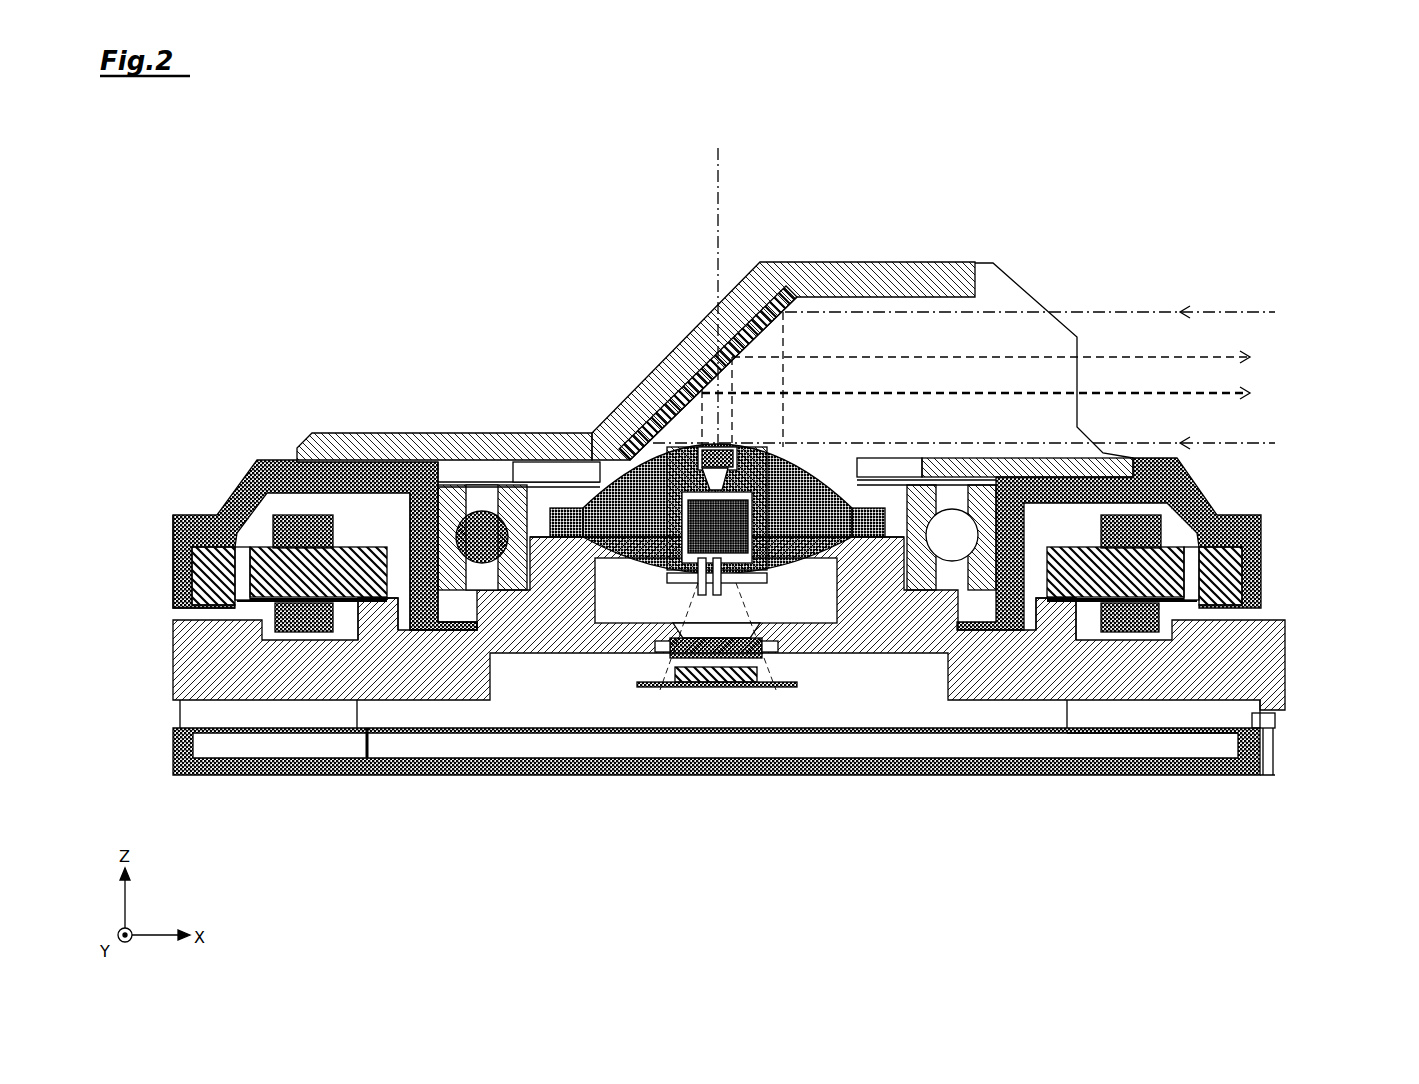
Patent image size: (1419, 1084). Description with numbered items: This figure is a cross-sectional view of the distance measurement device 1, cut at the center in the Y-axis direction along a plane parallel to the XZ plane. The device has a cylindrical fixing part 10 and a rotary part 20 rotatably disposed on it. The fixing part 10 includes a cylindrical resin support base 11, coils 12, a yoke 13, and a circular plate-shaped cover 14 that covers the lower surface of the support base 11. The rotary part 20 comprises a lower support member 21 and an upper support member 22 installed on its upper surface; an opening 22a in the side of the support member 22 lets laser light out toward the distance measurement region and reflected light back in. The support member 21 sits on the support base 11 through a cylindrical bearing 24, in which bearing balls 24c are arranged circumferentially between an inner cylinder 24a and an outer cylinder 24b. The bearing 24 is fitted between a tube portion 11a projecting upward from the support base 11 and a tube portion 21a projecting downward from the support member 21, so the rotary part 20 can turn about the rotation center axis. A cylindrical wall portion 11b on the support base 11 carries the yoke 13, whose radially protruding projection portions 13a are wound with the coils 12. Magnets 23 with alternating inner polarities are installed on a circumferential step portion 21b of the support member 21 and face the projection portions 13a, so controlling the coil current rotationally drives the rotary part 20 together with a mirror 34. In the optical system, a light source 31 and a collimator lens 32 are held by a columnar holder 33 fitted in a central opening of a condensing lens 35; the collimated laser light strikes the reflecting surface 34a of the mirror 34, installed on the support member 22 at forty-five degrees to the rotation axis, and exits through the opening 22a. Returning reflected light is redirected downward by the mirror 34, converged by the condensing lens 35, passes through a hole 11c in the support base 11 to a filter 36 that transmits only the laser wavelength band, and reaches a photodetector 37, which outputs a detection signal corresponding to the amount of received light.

The distance measurement device 1 is at (250, 215).
The fixing part 10 is at (209, 793).
The support base 11 is at (173, 655).
The tube portion 11a is at (538, 580).
The wall portion 11b is at (425, 640).
The hole 11c is at (668, 602).
The coils 12 is at (318, 628).
The yoke 13 is at (375, 598).
The projection portions 13a is at (268, 606).
The cover 14 is at (1226, 770).
The rotary part 20 is at (1033, 234).
The support member 21 is at (268, 459).
The tube portion 21a is at (413, 560).
The step portion 21b is at (199, 519).
The support member 22 is at (920, 257).
The opening 22a is at (1044, 342).
The magnets 23 is at (174, 552).
The bearing 24 is at (1023, 845).
The inner cylinder 24a is at (916, 592).
The outer cylinder 24b is at (997, 592).
The bearing balls 24c is at (944, 560).
The light source 31 is at (772, 575).
The collimator lens 32 is at (693, 445).
The holder 33 is at (650, 468).
The mirror 34 is at (668, 336).
The reflecting surface 34a is at (762, 334).
The condensing lens 35 is at (603, 480).
The filter 36 is at (745, 672).
The photodetector 37 is at (707, 660).